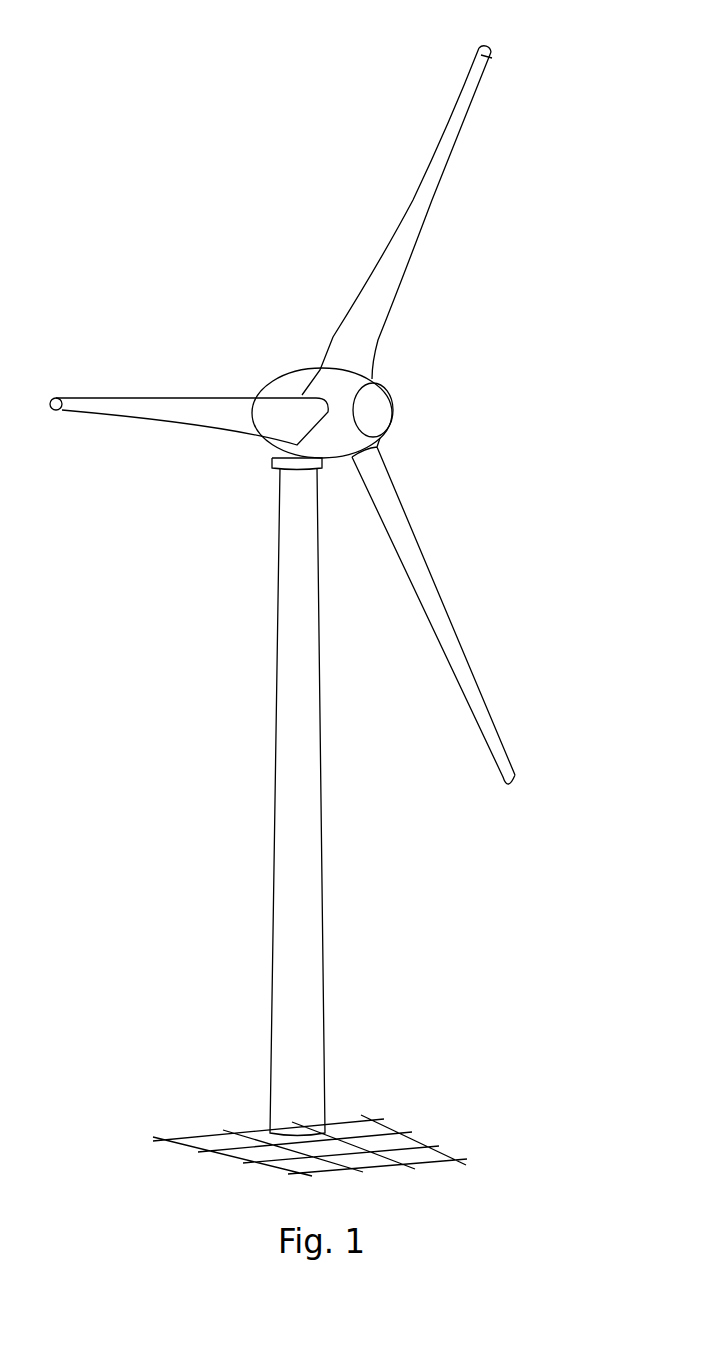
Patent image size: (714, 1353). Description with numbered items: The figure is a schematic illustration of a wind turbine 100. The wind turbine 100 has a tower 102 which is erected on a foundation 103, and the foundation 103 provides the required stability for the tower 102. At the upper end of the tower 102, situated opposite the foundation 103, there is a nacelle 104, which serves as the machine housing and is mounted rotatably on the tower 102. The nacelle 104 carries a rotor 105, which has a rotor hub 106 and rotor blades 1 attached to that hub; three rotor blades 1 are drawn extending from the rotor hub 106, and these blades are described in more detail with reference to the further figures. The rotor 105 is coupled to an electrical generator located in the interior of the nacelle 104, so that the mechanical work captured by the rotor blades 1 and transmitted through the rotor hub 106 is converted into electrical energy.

The wind turbine 100 is at (235, 537).
The rotor blades 1 is at (438, 168).
The tower 102 is at (305, 903).
The foundation 103 is at (450, 1143).
The nacelle 104 is at (290, 383).
The rotor 105 is at (461, 334).
The rotor hub 106 is at (378, 410).